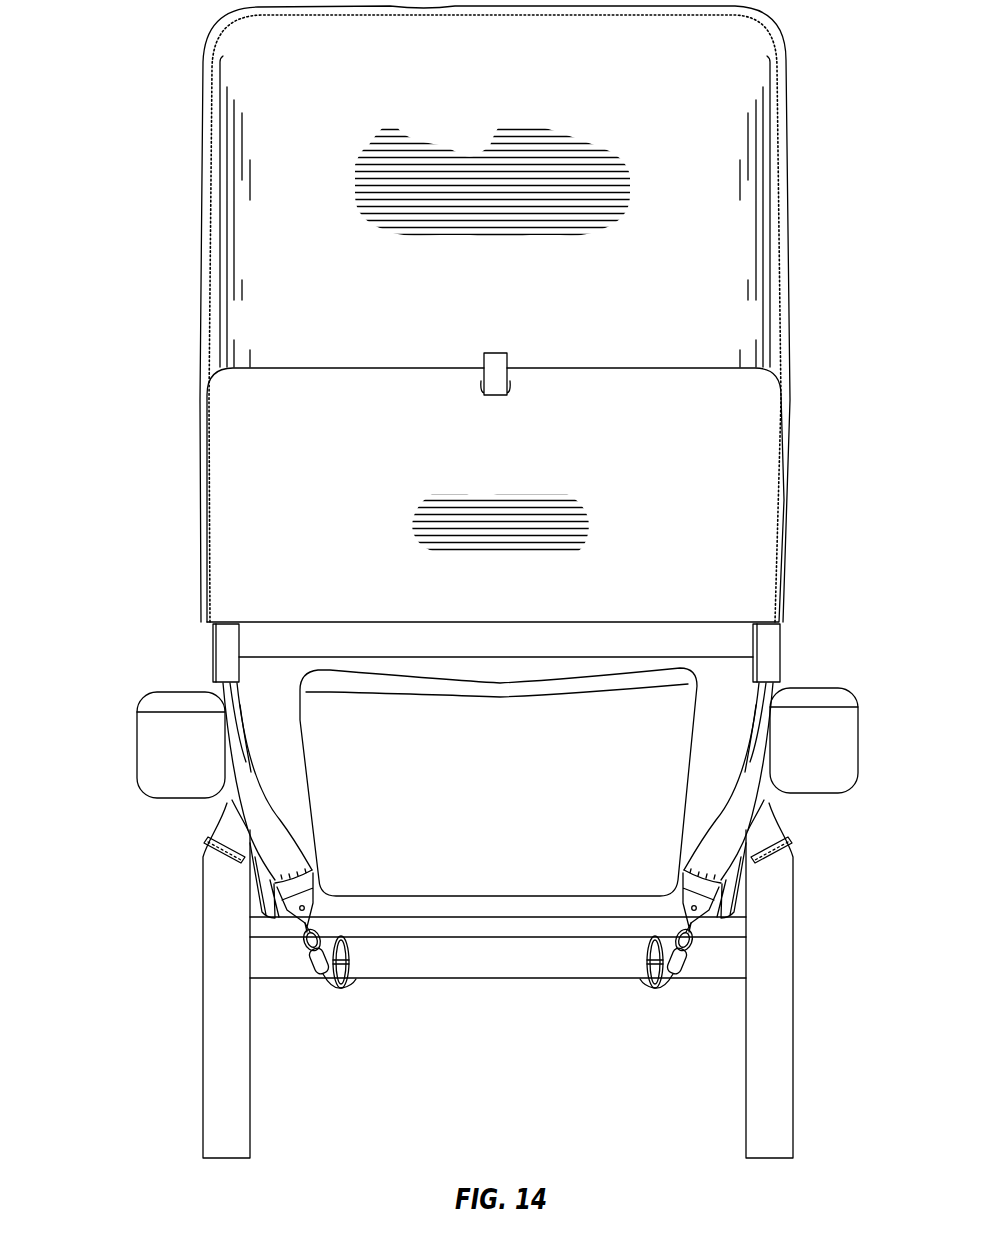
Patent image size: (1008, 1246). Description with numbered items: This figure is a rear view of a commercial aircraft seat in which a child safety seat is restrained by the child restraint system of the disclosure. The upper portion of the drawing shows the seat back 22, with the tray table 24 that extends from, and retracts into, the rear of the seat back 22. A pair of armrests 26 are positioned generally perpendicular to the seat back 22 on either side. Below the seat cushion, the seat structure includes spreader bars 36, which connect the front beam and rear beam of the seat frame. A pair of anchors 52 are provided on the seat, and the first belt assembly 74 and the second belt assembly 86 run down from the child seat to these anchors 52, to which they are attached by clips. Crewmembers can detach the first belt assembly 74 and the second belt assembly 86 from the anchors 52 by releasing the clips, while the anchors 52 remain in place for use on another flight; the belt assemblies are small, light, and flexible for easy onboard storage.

The seat back 22 is at (784, 37).
The tray table 24 is at (782, 405).
The armrests 26 is at (137, 747).
The spreader bars 36 is at (720, 950).
The anchor 52 is at (350, 1003).
The first belt assembly 74 is at (785, 862).
The second belt assembly 86 is at (211, 862).